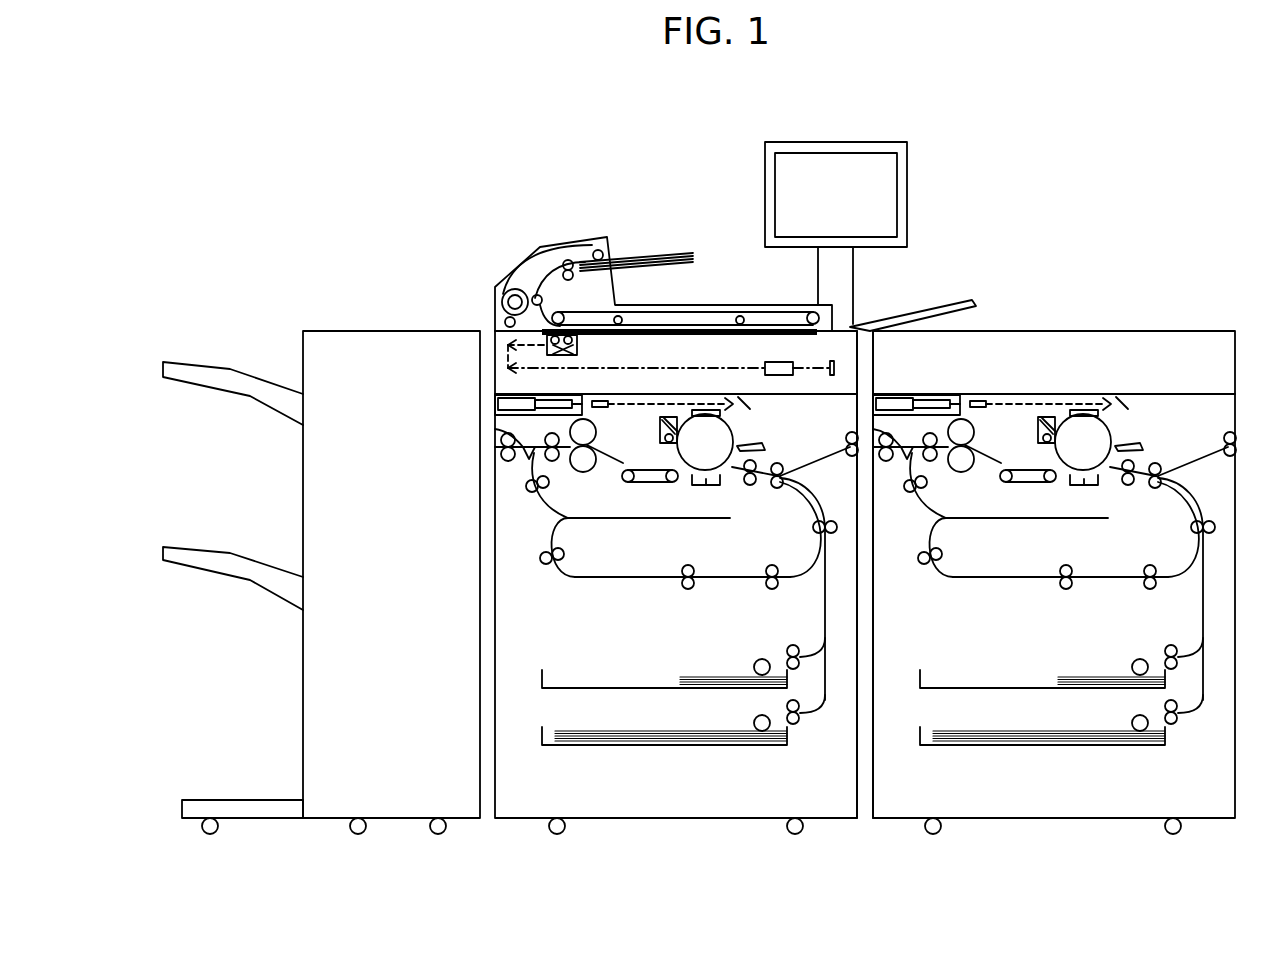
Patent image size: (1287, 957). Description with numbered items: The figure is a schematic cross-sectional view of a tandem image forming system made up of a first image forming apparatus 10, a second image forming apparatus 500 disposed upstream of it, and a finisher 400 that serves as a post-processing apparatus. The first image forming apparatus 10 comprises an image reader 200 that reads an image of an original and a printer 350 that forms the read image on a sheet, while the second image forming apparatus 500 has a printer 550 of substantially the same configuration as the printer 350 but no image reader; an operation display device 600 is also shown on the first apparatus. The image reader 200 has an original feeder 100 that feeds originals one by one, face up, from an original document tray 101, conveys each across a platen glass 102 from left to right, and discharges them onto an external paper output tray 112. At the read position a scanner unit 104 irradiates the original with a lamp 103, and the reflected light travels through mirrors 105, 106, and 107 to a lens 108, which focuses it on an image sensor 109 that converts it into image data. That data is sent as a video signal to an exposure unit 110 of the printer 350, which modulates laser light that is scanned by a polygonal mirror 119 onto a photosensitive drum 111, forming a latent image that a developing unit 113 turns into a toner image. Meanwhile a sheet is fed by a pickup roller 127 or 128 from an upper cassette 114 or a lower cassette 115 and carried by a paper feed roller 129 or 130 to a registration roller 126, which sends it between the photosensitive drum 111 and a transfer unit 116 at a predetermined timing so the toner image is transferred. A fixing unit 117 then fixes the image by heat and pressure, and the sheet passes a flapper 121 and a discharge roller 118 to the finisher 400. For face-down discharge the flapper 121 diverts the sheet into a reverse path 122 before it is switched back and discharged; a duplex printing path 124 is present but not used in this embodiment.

The first image forming apparatus 10 is at (740, 836).
The original feeder 100 is at (561, 222).
The original document tray 101 is at (680, 273).
The platen glass 102 is at (788, 329).
The lamp 103 is at (578, 340).
The scanner unit 104 is at (578, 352).
The mirror 105 is at (568, 356).
The mirror 106 is at (498, 346).
The mirror 107 is at (498, 371).
The lens 108 is at (765, 364).
The image sensor 109 is at (830, 362).
The exposure unit 110 is at (503, 395).
The photosensitive drum 111 is at (746, 412).
The external paper output tray 112 is at (960, 300).
The developing unit 113 is at (755, 441).
The upper cassette 114 is at (540, 677).
The lower cassette 115 is at (540, 735).
The transfer unit 116 is at (716, 488).
The fixing unit 117 is at (585, 472).
The discharge roller 118 is at (498, 453).
The polygonal mirror 119 is at (562, 411).
The flapper 121 is at (500, 432).
The reverse path 122 is at (546, 503).
The duplex printing path 124 is at (654, 579).
The registration roller 126 is at (750, 486).
The pickup roller 127 is at (758, 658).
The pickup roller 128 is at (754, 718).
The paper feed roller 129 is at (793, 644).
The paper feed roller 130 is at (796, 726).
The image reader 200 is at (859, 369).
The printer 350 is at (836, 822).
The finisher 400 is at (379, 312).
The second image forming apparatus 500 is at (1133, 310).
The printer 550 is at (1040, 820).
The operation display device 600 is at (745, 170).